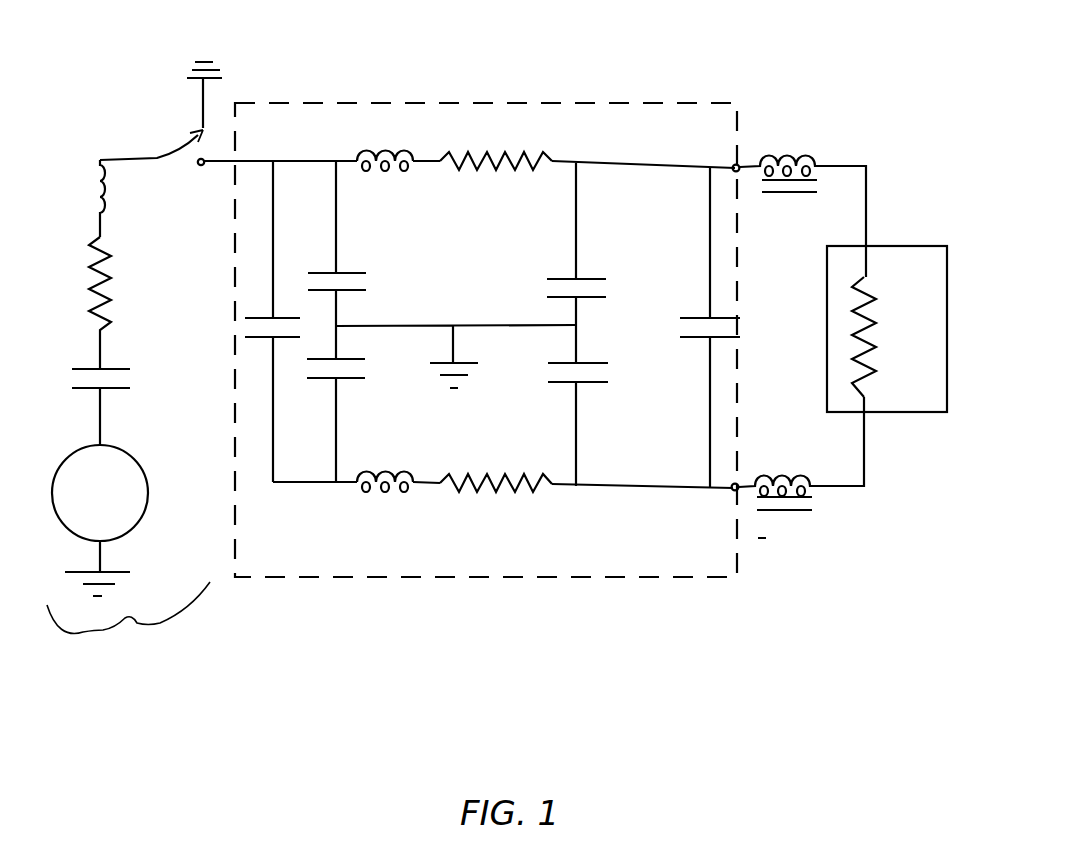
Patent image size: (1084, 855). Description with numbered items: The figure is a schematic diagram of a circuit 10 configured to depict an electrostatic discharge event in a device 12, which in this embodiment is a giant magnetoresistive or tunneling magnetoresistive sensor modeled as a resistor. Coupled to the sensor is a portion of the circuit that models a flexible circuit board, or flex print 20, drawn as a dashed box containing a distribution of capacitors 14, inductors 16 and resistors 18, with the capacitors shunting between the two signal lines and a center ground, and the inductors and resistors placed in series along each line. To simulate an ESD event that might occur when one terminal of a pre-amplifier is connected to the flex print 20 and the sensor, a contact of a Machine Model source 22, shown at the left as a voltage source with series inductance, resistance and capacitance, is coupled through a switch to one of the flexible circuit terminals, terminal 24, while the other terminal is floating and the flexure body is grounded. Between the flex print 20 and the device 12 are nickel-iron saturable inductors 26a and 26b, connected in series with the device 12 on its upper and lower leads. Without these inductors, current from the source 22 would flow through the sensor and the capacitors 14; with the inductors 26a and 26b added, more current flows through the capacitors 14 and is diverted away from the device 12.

The circuit 10 is at (663, 66).
The device 12 is at (921, 412).
The capacitors 14 is at (262, 313).
The inductors 16 is at (393, 176).
The resistors 18 is at (490, 178).
The flex print 20 is at (476, 580).
The Machine Model source 22 is at (137, 623).
The terminal 24 is at (207, 169).
The nickel-iron inductor 26a is at (822, 154).
The nickel-iron inductor 26b is at (835, 503).